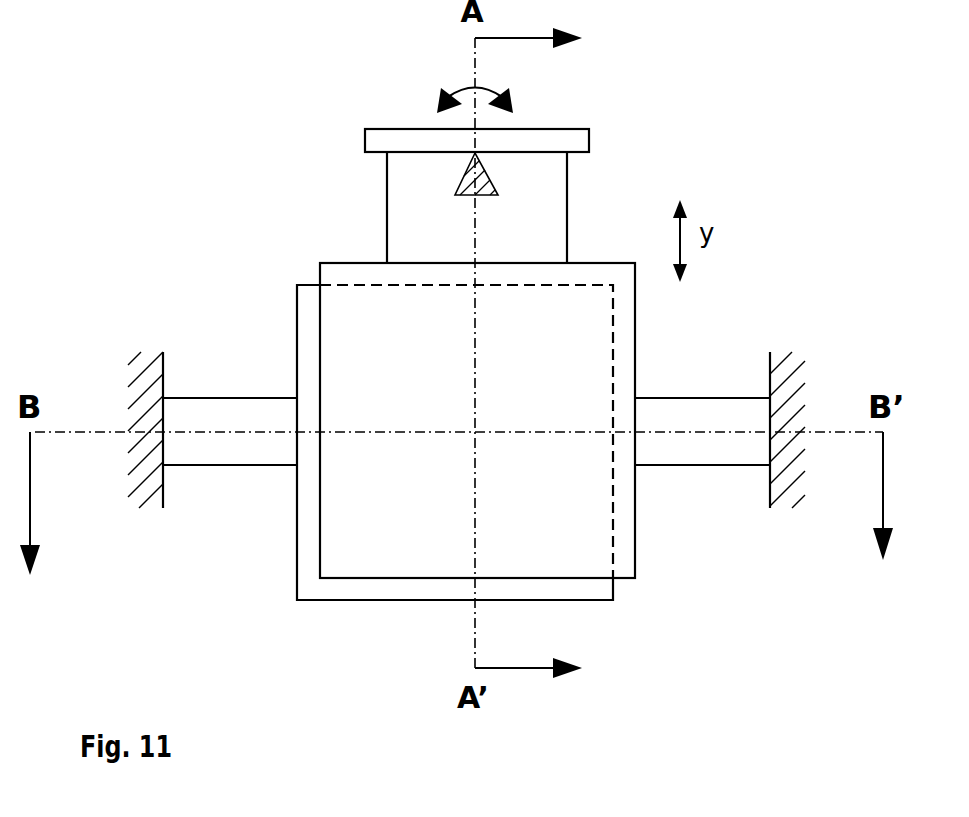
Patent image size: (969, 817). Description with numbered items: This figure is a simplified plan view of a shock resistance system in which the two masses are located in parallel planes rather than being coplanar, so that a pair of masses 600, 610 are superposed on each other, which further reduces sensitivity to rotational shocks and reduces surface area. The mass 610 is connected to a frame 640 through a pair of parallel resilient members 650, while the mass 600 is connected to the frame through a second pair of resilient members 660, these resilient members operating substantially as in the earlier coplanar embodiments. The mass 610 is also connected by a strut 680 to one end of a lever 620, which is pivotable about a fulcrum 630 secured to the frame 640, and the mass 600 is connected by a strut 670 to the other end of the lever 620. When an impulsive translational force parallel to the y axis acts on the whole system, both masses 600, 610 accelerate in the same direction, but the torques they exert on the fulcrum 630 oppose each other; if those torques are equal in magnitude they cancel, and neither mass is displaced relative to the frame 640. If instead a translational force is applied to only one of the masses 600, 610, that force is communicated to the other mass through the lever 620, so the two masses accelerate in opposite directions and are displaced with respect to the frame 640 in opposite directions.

The mass 600 is at (635, 530).
The mass 610 is at (338, 600).
The lever 620 is at (545, 129).
The fulcrum 630 is at (455, 195).
The frame 640 is at (148, 488).
The resilient members 650 is at (230, 465).
The resilient members 660 is at (692, 465).
The strut 670 is at (567, 203).
The strut 680 is at (387, 202).